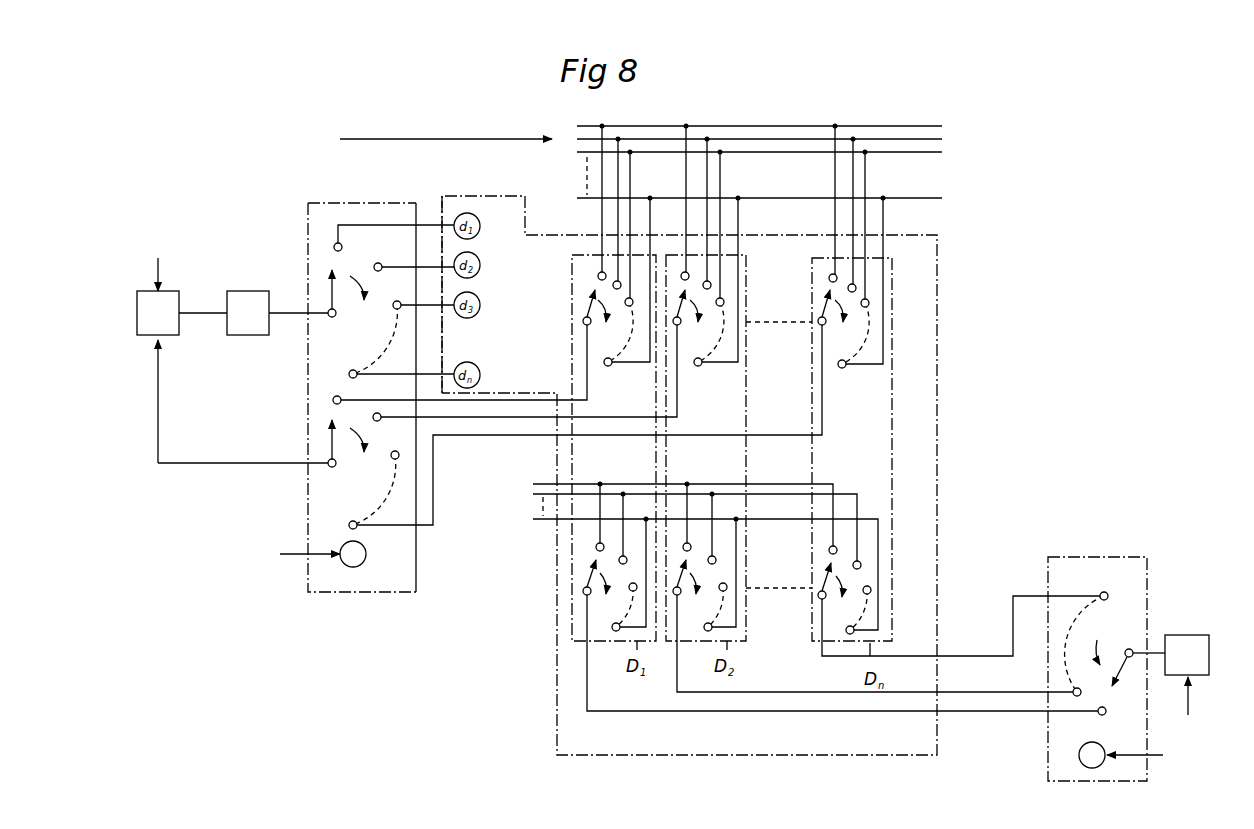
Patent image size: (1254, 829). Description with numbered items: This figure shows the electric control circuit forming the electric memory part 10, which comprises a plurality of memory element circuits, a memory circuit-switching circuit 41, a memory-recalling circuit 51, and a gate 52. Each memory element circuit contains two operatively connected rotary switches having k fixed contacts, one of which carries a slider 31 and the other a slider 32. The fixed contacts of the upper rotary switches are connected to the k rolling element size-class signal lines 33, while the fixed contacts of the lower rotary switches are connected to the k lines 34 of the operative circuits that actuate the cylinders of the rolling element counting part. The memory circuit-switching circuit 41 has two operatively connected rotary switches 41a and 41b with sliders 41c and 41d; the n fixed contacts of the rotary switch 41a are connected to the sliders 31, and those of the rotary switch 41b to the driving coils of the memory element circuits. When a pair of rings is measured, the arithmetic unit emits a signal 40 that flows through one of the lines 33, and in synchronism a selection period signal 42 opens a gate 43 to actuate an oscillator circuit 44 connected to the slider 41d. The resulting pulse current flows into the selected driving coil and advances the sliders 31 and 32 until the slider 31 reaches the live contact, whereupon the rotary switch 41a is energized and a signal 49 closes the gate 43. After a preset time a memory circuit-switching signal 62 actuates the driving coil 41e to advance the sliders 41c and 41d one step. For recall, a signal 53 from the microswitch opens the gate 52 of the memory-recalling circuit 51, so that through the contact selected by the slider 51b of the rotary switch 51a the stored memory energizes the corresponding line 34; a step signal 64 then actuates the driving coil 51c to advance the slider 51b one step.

The electric memory part 10 is at (1003, 200).
The slider 31 is at (600, 296).
The slider 32 is at (594, 572).
The rolling element size-class signal lines 33 is at (794, 116).
The lines of operative circuits 34 is at (724, 481).
The signal 40 is at (414, 139).
The memory circuit-switching circuit 41 is at (314, 203).
The rotary switch 41a is at (357, 503).
The rotary switch 41b is at (360, 348).
The slider 41c is at (331, 446).
The slider 41d is at (331, 296).
The driving coil 41e is at (358, 566).
The selection period signal 42 is at (160, 268).
The gate 43 is at (168, 324).
The oscillator circuit 44 is at (258, 324).
The signal 49 is at (222, 463).
The memory-recalling circuit 51 is at (1101, 557).
The rotary switch 51a is at (1126, 635).
The slider 51b is at (1122, 688).
The driving coil 51c is at (1079, 754).
The gate 52 is at (1190, 635).
The signal 53 is at (1190, 700).
The memory circuit-switching signal 62 is at (288, 554).
The step signal 64 is at (1152, 757).